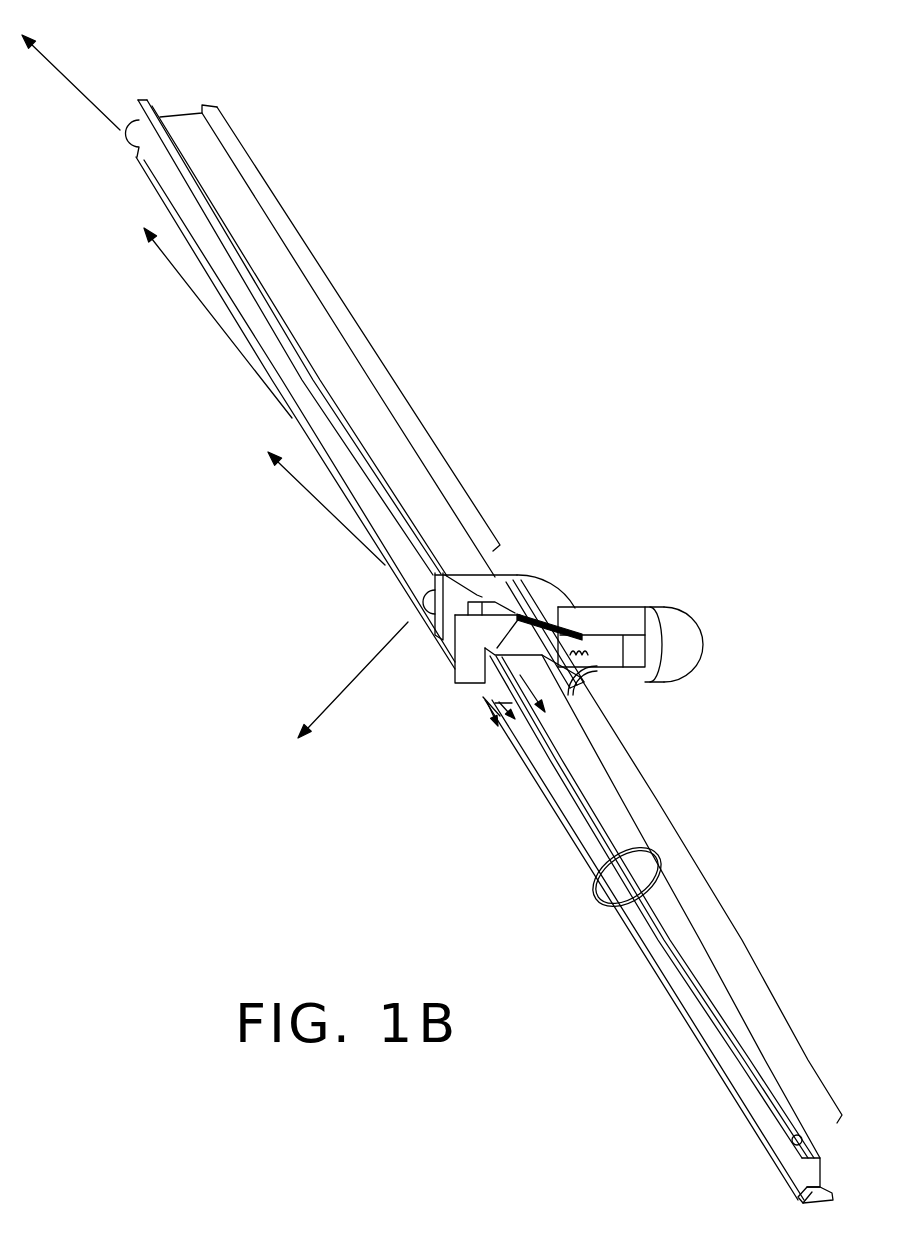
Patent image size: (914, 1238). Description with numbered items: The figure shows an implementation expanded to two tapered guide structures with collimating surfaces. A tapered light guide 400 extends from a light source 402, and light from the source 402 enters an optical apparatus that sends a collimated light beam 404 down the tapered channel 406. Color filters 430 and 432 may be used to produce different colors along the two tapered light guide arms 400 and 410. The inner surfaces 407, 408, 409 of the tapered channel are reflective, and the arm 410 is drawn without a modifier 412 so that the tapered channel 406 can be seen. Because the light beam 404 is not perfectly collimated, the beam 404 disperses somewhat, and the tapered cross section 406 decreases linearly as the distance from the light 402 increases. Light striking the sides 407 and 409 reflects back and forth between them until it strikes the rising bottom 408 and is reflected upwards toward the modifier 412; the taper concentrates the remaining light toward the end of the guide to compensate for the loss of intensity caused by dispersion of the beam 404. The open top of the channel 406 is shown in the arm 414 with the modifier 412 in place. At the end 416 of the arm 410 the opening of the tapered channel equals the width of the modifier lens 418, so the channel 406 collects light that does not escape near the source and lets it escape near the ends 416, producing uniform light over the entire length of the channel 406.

The tapered light guide 400 is at (364, 508).
The light source 402 is at (609, 650).
The collimated light beam 404 is at (525, 675).
The tapered channel 406 is at (602, 906).
The inner surface (side) 407 is at (773, 1120).
The rising bottom 408 is at (743, 1083).
The inner surface (side) 409 is at (815, 1170).
The tapered light guide arm 410 is at (697, 858).
The modifier 412 is at (364, 510).
The arm 414 is at (368, 345).
The end of arm 416 is at (823, 1173).
The modifier lens 418 is at (116, 130).
The color filter 430 is at (515, 568).
The color filter 432 is at (600, 686).